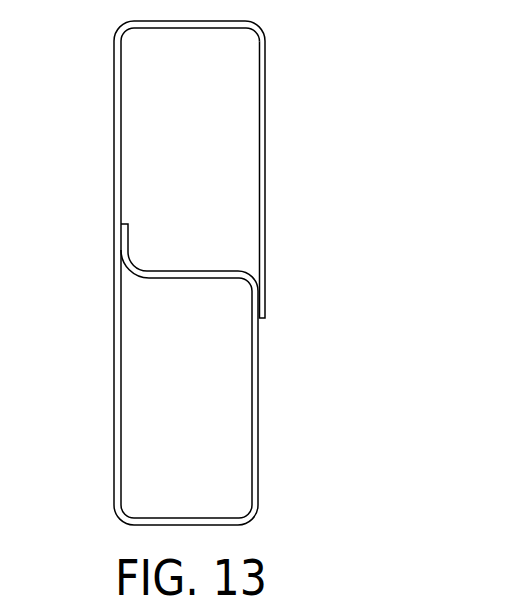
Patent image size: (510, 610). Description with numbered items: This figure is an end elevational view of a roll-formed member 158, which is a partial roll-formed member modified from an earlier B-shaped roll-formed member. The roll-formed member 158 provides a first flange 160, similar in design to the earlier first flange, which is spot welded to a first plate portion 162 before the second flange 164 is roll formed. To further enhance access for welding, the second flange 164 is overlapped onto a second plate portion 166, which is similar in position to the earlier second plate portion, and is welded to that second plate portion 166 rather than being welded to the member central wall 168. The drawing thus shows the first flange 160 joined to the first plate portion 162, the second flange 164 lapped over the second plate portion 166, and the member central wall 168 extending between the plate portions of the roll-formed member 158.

The roll-formed member 158 is at (359, 152).
The first flange 160 is at (129, 240).
The first plate portion 162 is at (114, 387).
The second flange 164 is at (265, 305).
The second plate portion 166 is at (258, 396).
The member central wall 168 is at (168, 271).